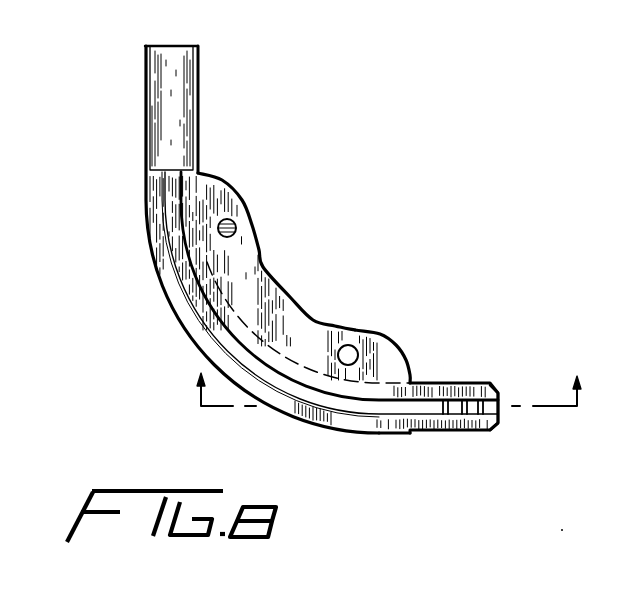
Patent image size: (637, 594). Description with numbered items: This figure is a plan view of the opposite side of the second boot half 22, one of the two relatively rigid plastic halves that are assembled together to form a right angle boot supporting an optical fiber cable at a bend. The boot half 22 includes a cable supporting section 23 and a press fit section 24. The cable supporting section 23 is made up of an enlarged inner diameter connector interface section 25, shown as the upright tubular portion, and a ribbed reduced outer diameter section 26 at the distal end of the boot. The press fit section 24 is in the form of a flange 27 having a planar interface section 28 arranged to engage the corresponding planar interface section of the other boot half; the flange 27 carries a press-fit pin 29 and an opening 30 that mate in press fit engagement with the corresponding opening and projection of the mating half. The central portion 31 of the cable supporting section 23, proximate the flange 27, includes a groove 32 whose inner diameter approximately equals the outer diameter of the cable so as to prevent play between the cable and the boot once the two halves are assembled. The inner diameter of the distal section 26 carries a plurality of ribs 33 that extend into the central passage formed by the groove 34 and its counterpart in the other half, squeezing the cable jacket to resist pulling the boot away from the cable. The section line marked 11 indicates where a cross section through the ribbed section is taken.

The boot half 22 is at (163, 131).
The connector interface section 25 is at (176, 107).
The central portion 31 is at (166, 262).
The groove 32 is at (208, 315).
The planar interface section 28 is at (252, 266).
The flange 27 is at (388, 363).
The press fit section 24 is at (303, 320).
The press-fit pin 29 is at (232, 223).
The opening 30 is at (358, 353).
The cable supporting section 23 is at (336, 432).
The ribbed reduced outer diameter section 26 is at (500, 386).
The ribs 33 is at (479, 432).
The groove 34 is at (500, 424).
The section line 11- 11 is at (393, 393).